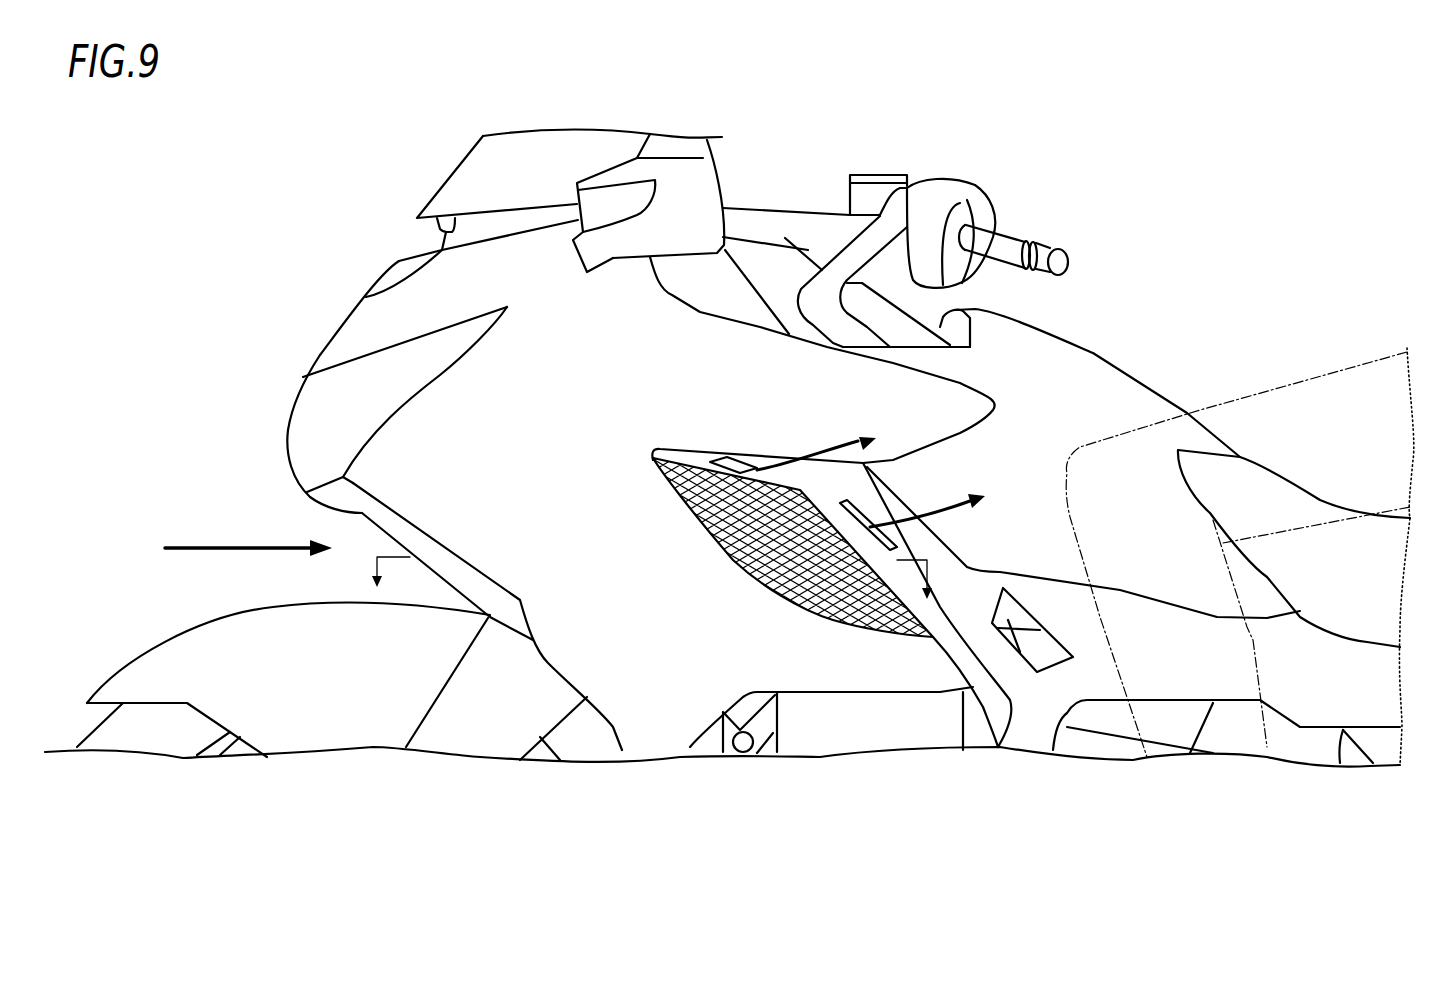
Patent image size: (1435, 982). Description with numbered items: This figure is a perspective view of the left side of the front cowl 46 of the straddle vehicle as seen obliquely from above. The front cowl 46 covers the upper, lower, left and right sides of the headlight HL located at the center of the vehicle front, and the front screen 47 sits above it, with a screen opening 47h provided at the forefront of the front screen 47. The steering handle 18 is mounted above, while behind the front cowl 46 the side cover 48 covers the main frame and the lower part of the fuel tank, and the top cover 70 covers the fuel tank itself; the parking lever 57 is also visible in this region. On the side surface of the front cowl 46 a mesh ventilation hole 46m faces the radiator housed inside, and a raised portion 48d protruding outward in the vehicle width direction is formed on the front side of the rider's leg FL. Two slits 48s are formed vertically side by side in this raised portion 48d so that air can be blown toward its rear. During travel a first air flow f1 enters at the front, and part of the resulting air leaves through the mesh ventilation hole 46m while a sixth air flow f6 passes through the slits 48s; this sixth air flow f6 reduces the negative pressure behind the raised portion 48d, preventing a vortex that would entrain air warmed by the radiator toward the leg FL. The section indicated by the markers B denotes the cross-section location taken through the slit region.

The front screen 47 is at (483, 186).
The screen opening 47h is at (432, 235).
The headlight HL is at (325, 415).
The steering handle 18 is at (1007, 245).
The top cover 70 is at (1090, 367).
The leg of a rider FL is at (1252, 400).
The front cowl 46 is at (540, 533).
The mesh ventilation hole 46m is at (750, 518).
The slits 48s is at (745, 458).
The raised portion 48d is at (1043, 600).
The side cover 48 is at (1307, 673).
The parking lever 57 is at (1007, 623).
The sixth air flow f6 is at (835, 455).
The first air flow f1 is at (208, 545).
The section line B is at (652, 578).